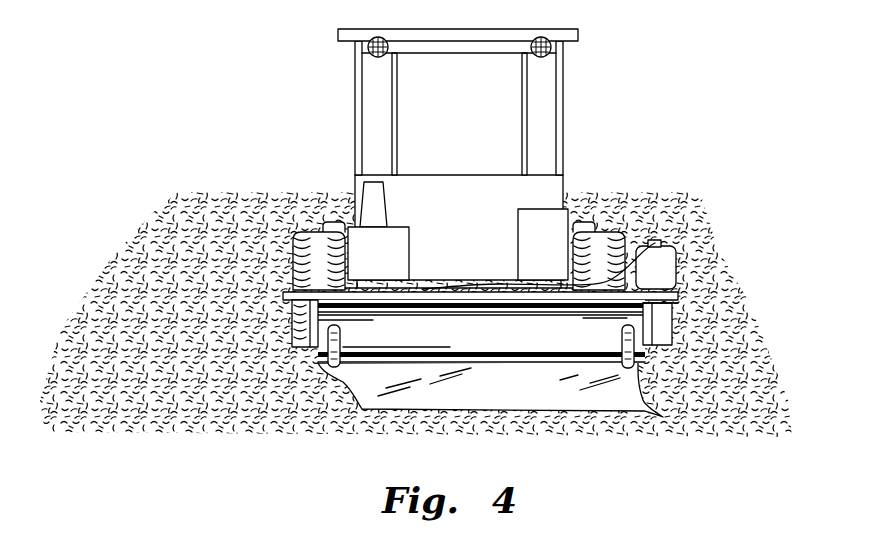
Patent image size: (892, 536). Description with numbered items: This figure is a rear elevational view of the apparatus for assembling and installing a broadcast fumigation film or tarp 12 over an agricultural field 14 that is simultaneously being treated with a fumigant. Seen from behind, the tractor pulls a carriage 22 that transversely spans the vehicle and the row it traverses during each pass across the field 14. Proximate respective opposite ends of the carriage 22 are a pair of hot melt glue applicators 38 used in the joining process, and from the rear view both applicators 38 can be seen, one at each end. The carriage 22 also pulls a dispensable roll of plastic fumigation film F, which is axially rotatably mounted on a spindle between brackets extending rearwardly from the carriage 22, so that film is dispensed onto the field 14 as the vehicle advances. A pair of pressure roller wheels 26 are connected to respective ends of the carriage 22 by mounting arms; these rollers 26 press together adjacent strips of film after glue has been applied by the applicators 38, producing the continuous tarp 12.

The broadcast fumigation film or tarp 12 is at (580, 33).
The agricultural field 14 is at (257, 215).
The carriage 22 is at (481, 298).
The pressure roller wheels 26 is at (316, 360).
The hot melt glue applicators 38 is at (290, 307).
The dispensable roll of plastic fumigation film F is at (370, 335).